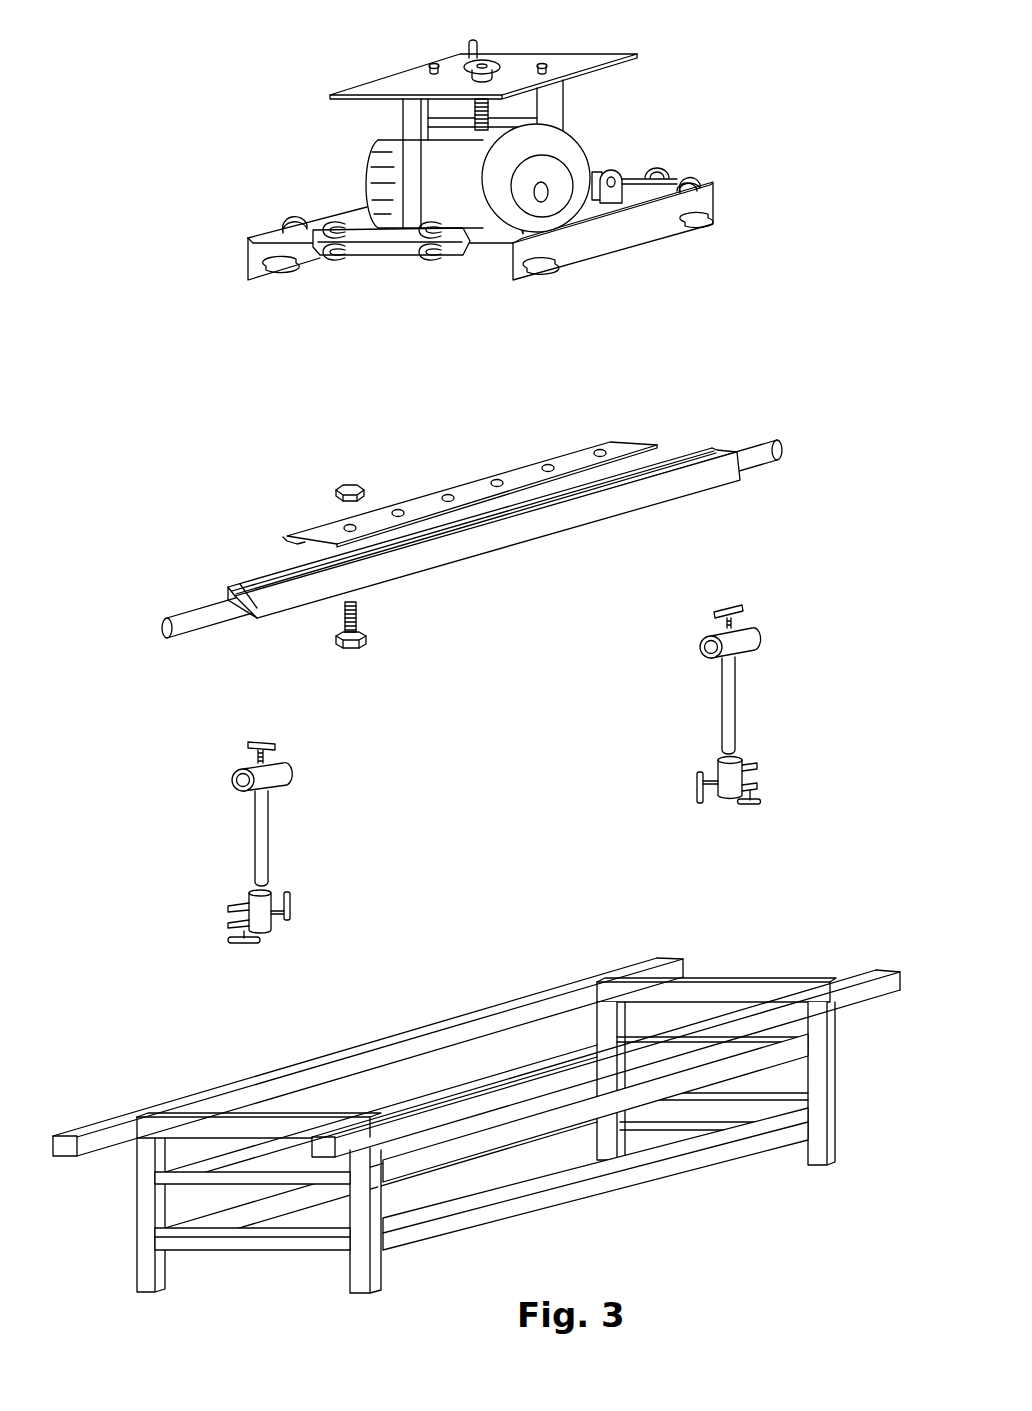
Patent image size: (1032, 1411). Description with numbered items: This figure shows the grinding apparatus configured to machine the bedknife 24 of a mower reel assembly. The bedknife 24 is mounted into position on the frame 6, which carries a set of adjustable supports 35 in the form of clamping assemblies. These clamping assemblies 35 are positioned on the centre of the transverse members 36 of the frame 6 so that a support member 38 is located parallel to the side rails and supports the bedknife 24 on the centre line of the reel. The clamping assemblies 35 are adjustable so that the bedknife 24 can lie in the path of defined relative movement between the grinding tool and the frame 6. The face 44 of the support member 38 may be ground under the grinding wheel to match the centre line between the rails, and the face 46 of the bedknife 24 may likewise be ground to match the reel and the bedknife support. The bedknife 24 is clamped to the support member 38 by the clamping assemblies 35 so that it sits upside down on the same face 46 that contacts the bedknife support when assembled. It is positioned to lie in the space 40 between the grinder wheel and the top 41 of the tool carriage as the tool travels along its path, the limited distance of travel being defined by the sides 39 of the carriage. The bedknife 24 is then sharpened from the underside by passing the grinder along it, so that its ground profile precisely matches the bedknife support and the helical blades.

The frame 6 is at (583, 1182).
The bedknife 24 is at (527, 468).
The adjustable supports 35 is at (275, 893).
The transverse members 36 is at (758, 980).
The support member 38 is at (667, 463).
The sides of the carriage 39 is at (372, 259).
The space 40 is at (507, 186).
The top of the tool carriage 41 is at (520, 65).
The face of the support member 44 is at (627, 487).
The face of the bedknife 46 is at (313, 543).